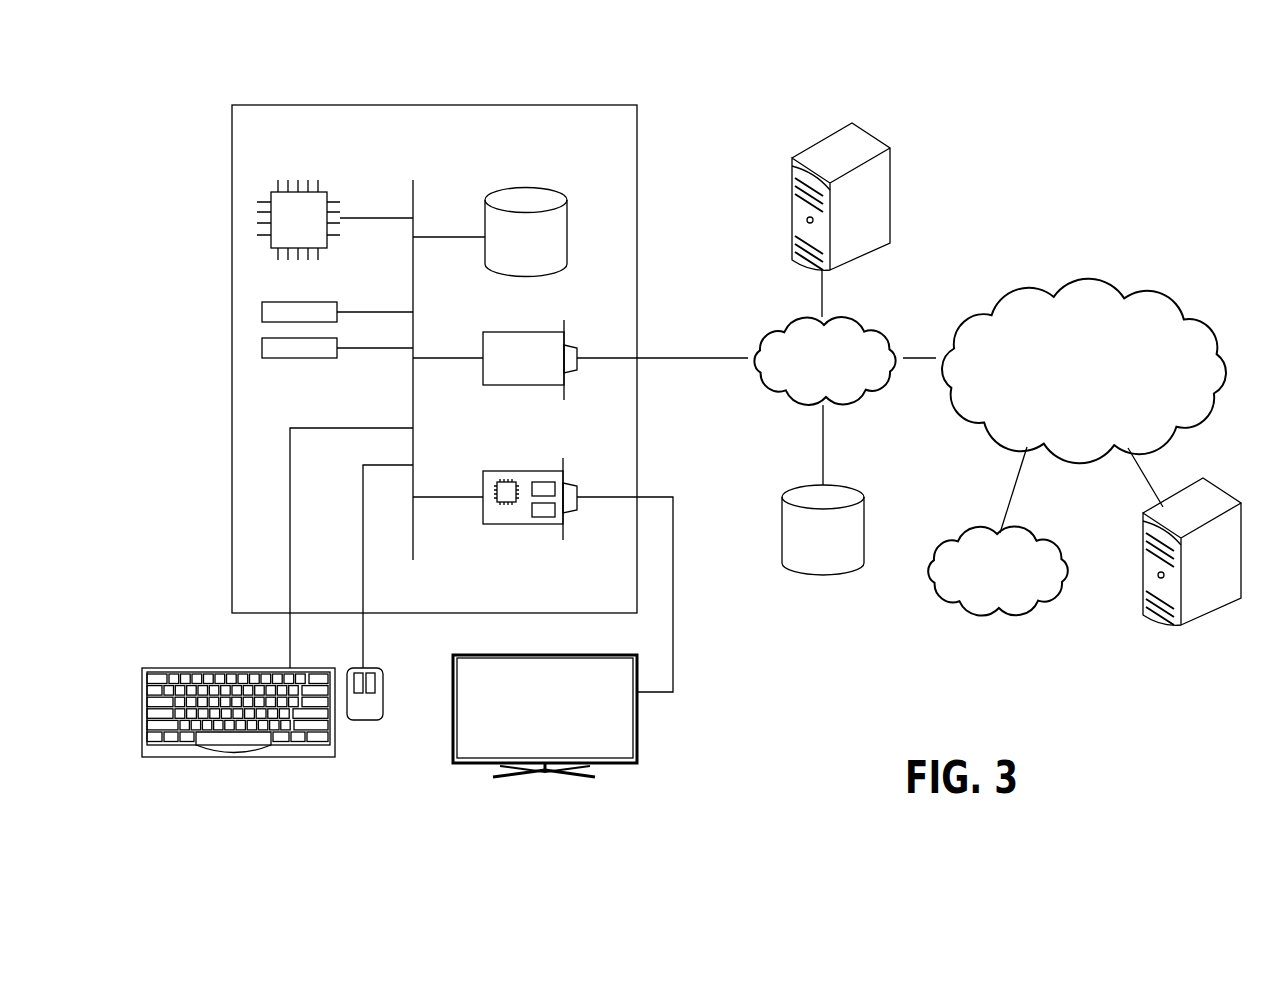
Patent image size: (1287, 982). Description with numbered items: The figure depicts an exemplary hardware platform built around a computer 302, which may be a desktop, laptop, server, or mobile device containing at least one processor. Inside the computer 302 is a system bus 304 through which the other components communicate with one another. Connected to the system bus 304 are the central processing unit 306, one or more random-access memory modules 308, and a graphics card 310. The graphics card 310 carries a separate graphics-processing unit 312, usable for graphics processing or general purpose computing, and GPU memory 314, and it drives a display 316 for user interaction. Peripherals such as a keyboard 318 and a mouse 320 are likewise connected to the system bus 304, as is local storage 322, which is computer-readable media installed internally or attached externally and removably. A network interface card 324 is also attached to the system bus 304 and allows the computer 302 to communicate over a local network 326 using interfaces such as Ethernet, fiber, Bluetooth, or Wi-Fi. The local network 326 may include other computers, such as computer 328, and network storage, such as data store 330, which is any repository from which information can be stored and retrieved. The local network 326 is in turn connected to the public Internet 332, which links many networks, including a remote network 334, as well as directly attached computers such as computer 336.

The computer 302 is at (592, 105).
The system bus 304 is at (416, 190).
The central processing unit 306 is at (322, 188).
The random-access memory modules 308 is at (337, 340).
The graphics card 310 is at (521, 504).
The graphics-processing unit 312 is at (506, 503).
The GPU memory 314 is at (542, 517).
The display 316 is at (638, 745).
The keyboard 318 is at (240, 758).
The mouse 320 is at (360, 722).
The local storage 322 is at (568, 219).
The network interface card 324 is at (483, 341).
The local network 326 is at (873, 318).
The computer 328 is at (877, 135).
The data store 330 is at (855, 488).
The public Internet 332 is at (1125, 283).
The remote network 334 is at (1050, 530).
The computer 336 is at (1220, 487).